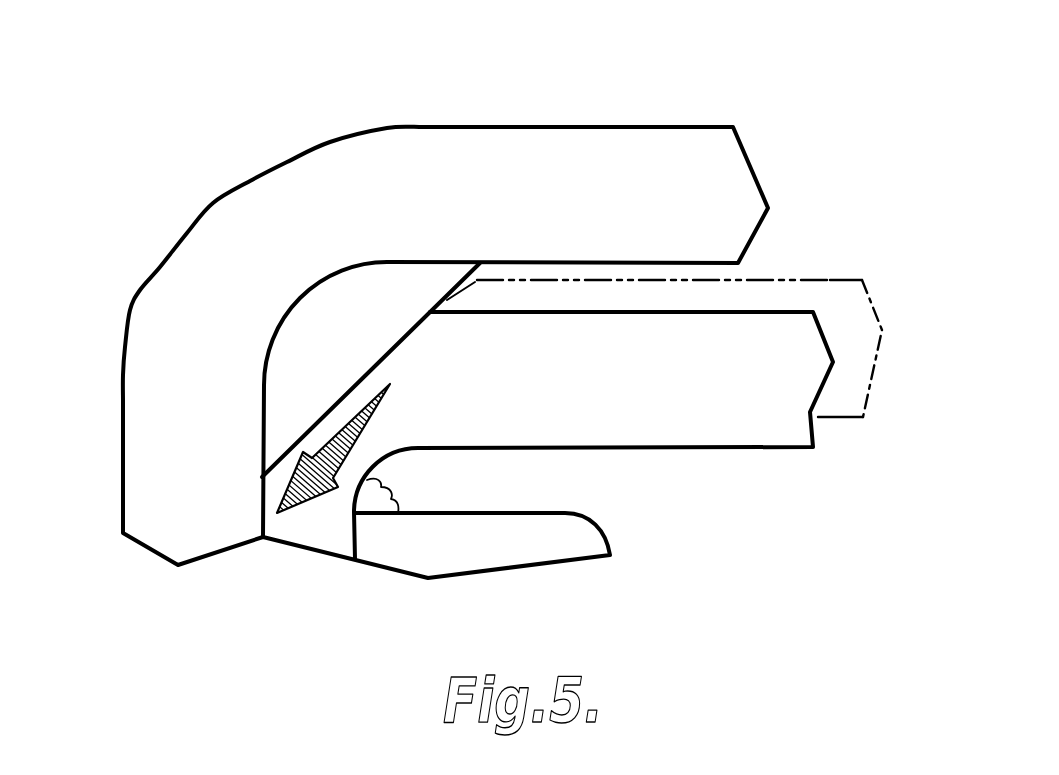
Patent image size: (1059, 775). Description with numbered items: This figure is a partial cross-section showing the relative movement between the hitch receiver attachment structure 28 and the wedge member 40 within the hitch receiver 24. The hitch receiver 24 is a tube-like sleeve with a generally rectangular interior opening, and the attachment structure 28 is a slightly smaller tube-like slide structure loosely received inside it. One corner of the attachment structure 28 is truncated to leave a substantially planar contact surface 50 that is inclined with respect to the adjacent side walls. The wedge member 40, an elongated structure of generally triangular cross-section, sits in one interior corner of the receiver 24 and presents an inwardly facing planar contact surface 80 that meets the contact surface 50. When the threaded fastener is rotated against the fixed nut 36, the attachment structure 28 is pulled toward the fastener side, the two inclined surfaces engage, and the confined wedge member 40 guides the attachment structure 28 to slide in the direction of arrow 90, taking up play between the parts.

The hitch receiver 24 is at (685, 148).
The hitch receiver attachment structure 28 is at (830, 280).
The nut 36 is at (563, 533).
The wedge member 40 is at (277, 430).
The contact surface 50 is at (357, 375).
The contact surface 80 is at (447, 300).
The arrow 90 is at (313, 497).